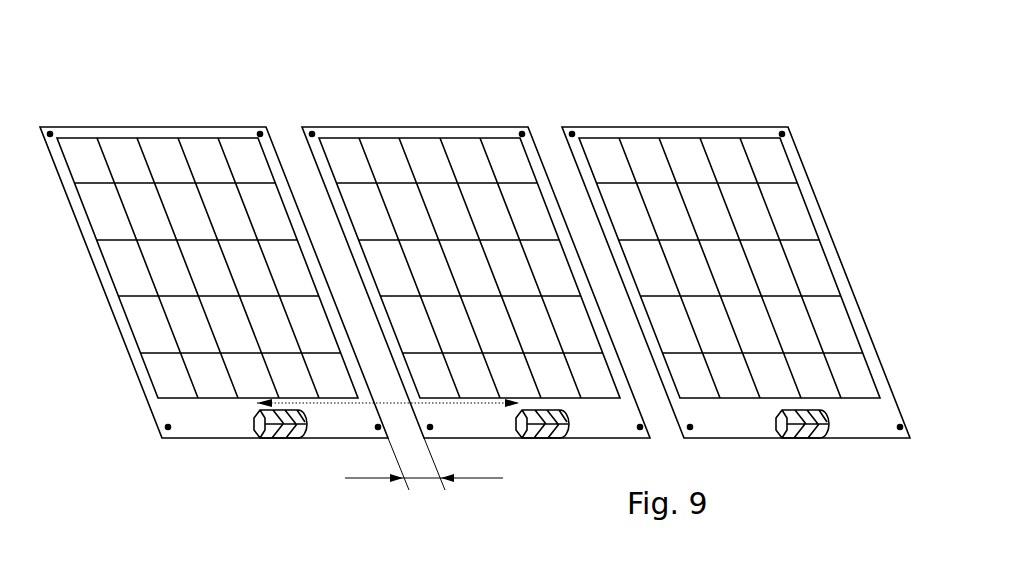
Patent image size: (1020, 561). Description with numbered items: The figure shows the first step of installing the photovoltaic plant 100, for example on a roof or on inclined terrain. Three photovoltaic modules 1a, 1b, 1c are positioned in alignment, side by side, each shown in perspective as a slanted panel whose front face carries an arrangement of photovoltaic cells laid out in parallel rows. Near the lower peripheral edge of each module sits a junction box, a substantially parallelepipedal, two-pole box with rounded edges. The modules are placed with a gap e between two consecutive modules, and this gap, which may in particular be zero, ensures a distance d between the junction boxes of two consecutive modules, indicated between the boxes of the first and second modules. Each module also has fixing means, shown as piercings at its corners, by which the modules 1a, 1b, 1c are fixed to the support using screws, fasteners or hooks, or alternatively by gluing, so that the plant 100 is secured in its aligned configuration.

The photovoltaic module 1a is at (163, 127).
The photovoltaic module 1b is at (392, 127).
The photovoltaic module 1c is at (615, 127).
The photovoltaic plant 100 is at (880, 150).
The distance between junction boxes d is at (388, 394).
The gap between consecutive modules e is at (424, 473).